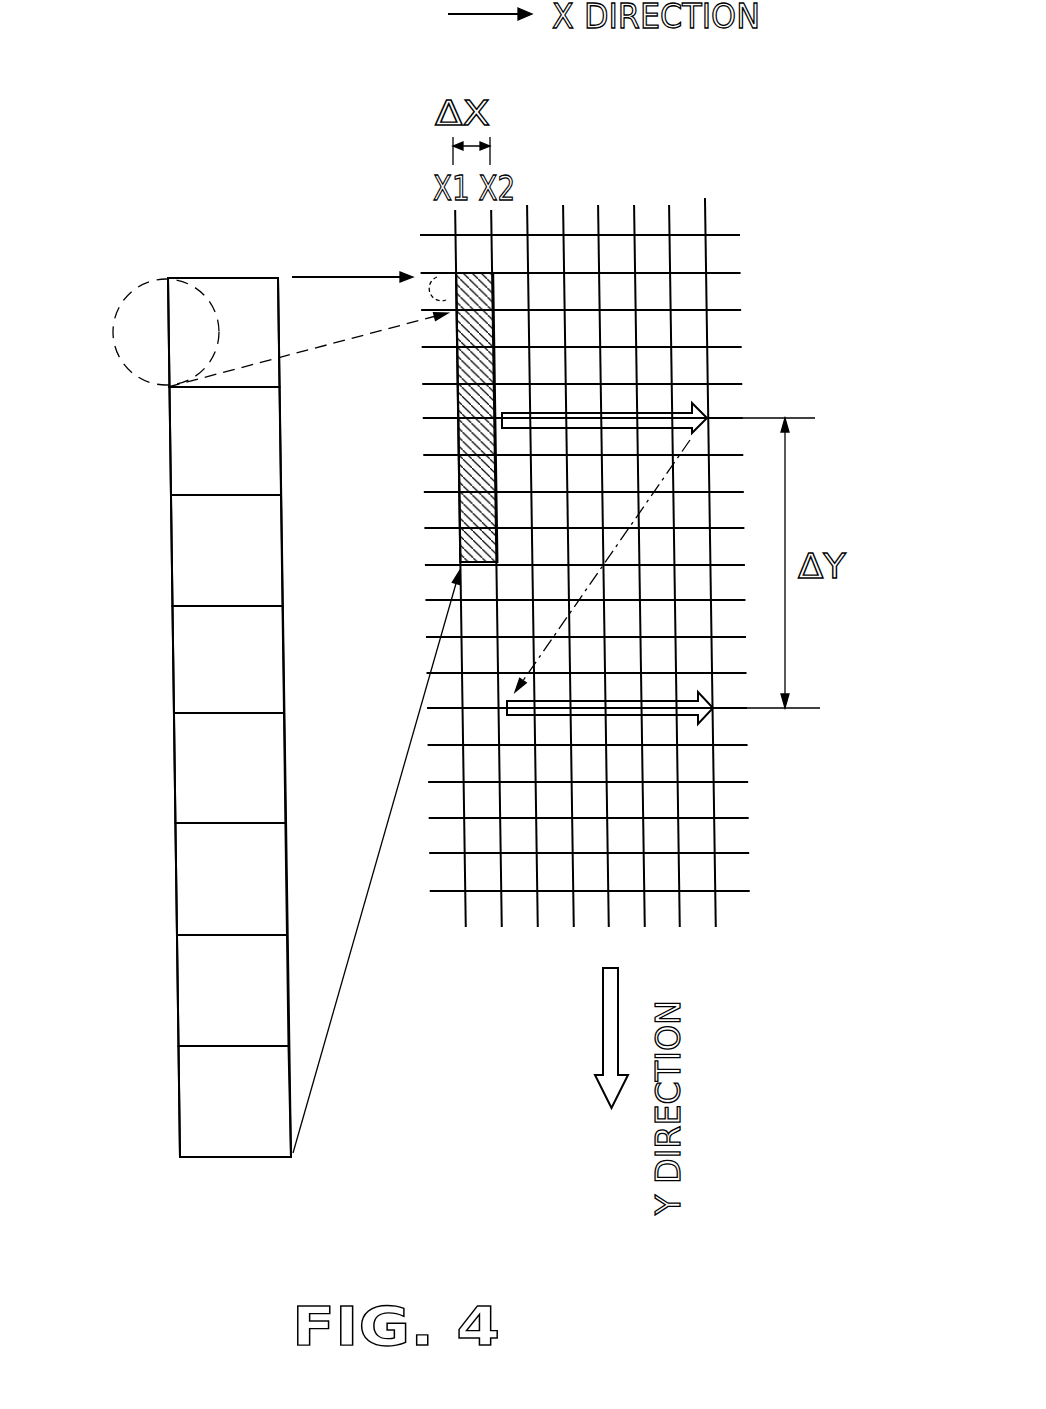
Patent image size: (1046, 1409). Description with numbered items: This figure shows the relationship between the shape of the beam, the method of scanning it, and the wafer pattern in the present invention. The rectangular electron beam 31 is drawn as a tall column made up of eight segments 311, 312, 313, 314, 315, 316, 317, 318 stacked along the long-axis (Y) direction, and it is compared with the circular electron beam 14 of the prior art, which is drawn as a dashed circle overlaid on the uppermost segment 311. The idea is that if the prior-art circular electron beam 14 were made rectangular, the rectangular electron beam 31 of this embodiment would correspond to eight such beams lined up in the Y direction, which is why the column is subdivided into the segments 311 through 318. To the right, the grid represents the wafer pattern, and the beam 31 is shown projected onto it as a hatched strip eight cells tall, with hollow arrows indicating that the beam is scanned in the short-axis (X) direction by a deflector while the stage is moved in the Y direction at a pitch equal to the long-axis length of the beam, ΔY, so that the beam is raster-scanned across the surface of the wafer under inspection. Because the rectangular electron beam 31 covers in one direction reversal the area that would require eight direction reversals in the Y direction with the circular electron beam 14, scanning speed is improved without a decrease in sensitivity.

The circular electron beam 14 is at (148, 383).
The rectangular electron beam 31 is at (240, 277).
The light emitting element 311 is at (265, 323).
The light emitting element 312 is at (273, 452).
The light emitting element 313 is at (270, 553).
The light emitting element 314 is at (277, 665).
The light emitting element 315 is at (277, 775).
The light emitting element 316 is at (276, 882).
The light emitting element 317 is at (273, 992).
The light emitting element 318 is at (190, 1108).